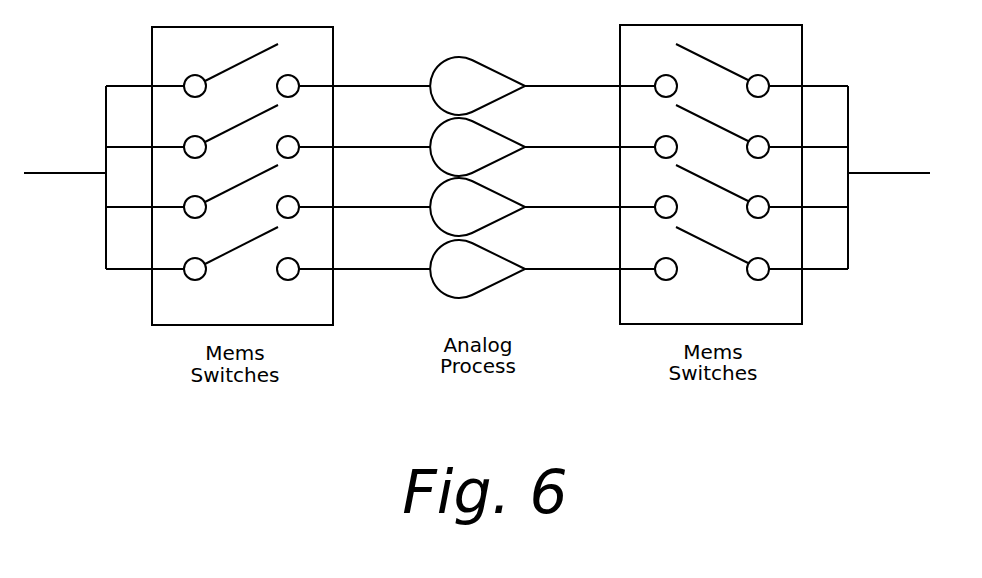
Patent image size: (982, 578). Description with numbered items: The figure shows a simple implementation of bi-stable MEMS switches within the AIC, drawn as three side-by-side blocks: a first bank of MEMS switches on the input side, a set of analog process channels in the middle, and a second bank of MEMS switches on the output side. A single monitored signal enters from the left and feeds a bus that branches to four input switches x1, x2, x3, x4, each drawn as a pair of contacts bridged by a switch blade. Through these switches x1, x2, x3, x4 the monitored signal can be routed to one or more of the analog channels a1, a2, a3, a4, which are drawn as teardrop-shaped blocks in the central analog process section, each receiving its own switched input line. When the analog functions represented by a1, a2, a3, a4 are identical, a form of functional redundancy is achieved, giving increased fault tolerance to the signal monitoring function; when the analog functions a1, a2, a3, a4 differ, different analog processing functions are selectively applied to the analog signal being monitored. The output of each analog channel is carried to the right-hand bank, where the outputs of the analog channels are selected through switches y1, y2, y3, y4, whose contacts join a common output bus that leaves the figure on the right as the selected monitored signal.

The bi-stable MEMS switch x1 is at (241, 70).
The bi-stable MEMS switch x2 is at (241, 131).
The bi-stable MEMS switch x3 is at (241, 191).
The bi-stable MEMS switch x4 is at (241, 253).
The analog channel a1 is at (477, 86).
The analog channel a2 is at (477, 147).
The analog channel a3 is at (477, 207).
The analog channel a4 is at (477, 269).
The bi-stable MEMS switch y1 is at (712, 70).
The bi-stable MEMS switch y2 is at (712, 131).
The bi-stable MEMS switch y3 is at (712, 191).
The bi-stable MEMS switch y4 is at (712, 253).